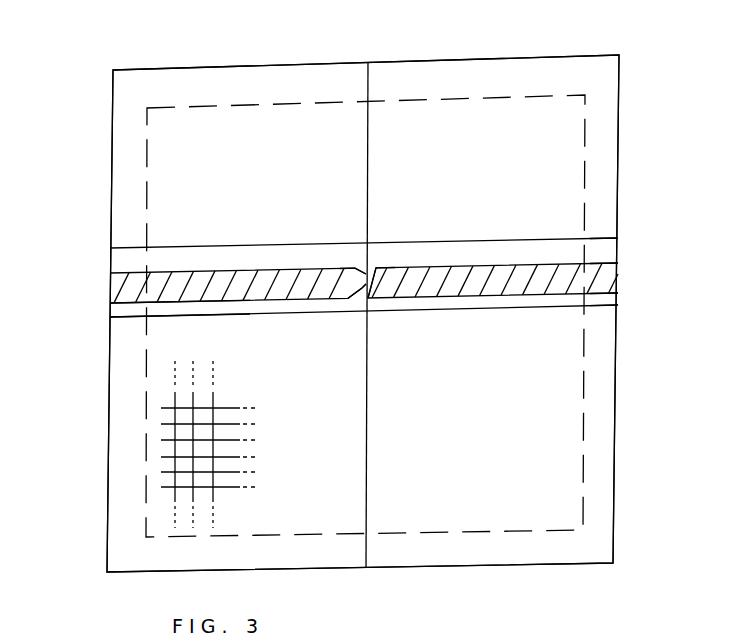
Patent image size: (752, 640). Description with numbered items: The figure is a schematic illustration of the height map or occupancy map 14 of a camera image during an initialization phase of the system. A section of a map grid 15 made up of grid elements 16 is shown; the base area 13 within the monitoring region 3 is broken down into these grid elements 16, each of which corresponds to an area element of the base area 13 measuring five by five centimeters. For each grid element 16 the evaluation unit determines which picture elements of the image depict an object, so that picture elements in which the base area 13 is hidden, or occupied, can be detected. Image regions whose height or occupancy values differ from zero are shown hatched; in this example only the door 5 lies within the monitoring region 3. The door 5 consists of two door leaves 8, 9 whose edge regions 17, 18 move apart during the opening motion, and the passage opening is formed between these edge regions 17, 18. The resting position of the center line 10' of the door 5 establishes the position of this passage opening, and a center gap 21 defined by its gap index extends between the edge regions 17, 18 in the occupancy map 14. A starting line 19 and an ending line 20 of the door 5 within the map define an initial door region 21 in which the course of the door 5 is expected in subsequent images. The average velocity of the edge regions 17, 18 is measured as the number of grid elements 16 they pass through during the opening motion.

The monitoring region 3 is at (526, 500).
The door 5 is at (652, 279).
The door leaf 8 is at (110, 311).
The door leaf 9 is at (600, 274).
The center line 10' is at (337, 320).
The base area 13 is at (595, 452).
The occupancy map 14 is at (620, 104).
The map grid 15 is at (163, 398).
The grid elements 16 is at (181, 454).
The edge region 17 is at (343, 273).
The edge region 18 is at (385, 283).
The starting line 19 is at (592, 306).
The ending line 20 is at (550, 238).
The initial door region 21 is at (371, 66).